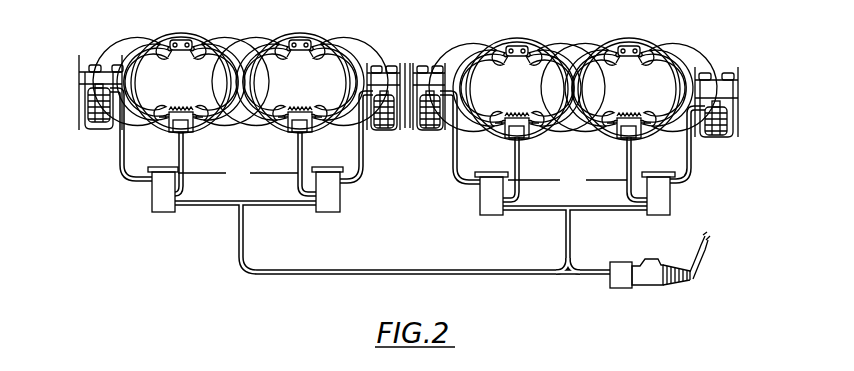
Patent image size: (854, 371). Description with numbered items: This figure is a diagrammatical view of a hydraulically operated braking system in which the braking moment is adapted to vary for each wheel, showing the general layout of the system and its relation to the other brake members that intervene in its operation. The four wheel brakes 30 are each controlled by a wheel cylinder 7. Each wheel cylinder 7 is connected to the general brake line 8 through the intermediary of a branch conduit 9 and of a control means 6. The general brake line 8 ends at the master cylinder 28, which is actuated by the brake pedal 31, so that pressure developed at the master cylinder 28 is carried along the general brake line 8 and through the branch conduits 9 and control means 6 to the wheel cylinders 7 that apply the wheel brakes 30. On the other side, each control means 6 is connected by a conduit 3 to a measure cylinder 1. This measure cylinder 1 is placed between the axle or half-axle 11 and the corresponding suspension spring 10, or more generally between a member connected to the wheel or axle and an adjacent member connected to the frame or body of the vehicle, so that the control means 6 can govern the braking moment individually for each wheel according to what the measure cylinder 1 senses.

The measure cylinder 1 is at (88, 98).
The conduit 3 is at (359, 134).
The control means 6 is at (152, 200).
The wheel cylinder 7 is at (192, 128).
The general brake line 8 is at (209, 207).
The branch conduit 9 is at (402, 177).
The suspension spring 10 is at (103, 121).
The axle or half-axle 11 is at (96, 72).
The master cylinder 28 is at (655, 262).
The wheel brake 30 is at (219, 66).
The brake pedal 31 is at (711, 246).